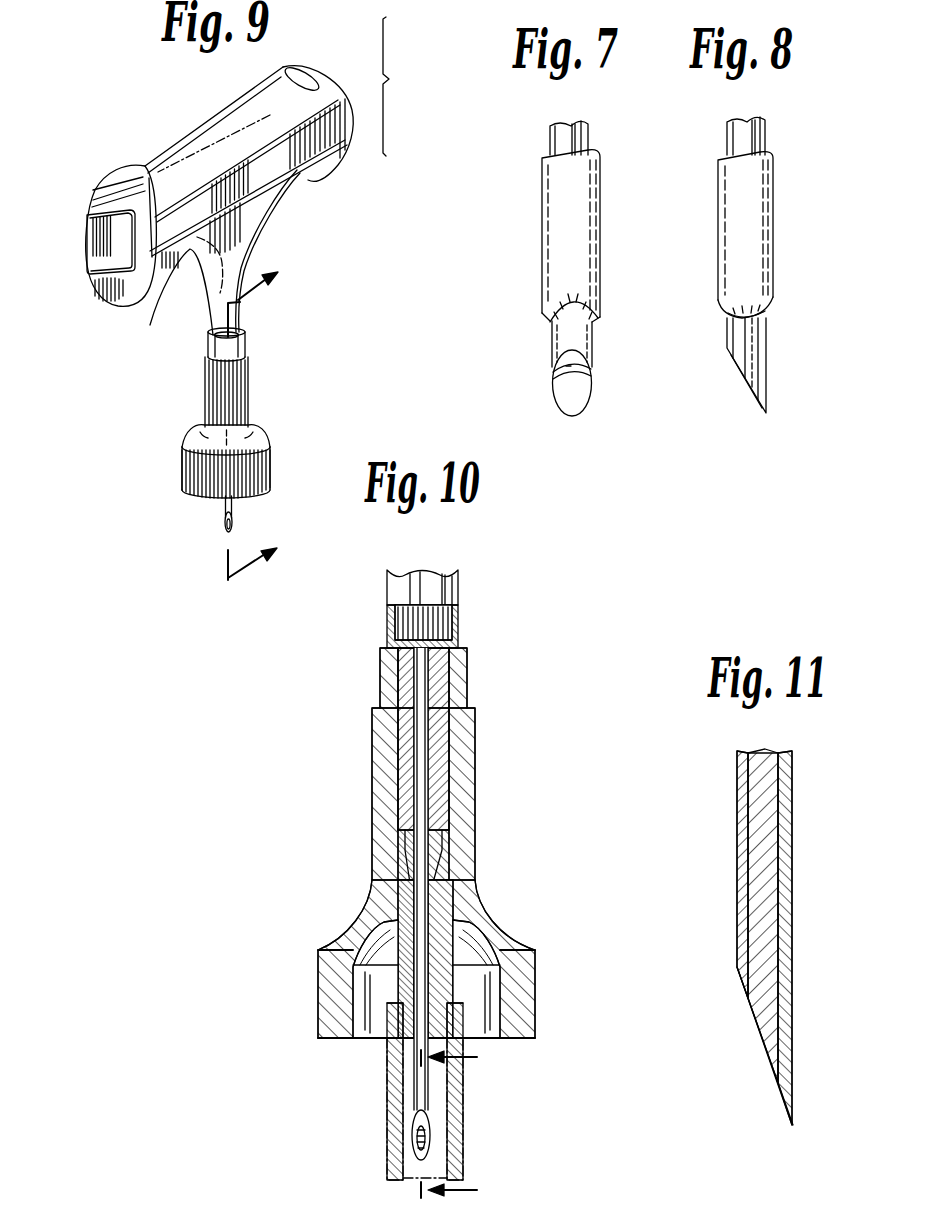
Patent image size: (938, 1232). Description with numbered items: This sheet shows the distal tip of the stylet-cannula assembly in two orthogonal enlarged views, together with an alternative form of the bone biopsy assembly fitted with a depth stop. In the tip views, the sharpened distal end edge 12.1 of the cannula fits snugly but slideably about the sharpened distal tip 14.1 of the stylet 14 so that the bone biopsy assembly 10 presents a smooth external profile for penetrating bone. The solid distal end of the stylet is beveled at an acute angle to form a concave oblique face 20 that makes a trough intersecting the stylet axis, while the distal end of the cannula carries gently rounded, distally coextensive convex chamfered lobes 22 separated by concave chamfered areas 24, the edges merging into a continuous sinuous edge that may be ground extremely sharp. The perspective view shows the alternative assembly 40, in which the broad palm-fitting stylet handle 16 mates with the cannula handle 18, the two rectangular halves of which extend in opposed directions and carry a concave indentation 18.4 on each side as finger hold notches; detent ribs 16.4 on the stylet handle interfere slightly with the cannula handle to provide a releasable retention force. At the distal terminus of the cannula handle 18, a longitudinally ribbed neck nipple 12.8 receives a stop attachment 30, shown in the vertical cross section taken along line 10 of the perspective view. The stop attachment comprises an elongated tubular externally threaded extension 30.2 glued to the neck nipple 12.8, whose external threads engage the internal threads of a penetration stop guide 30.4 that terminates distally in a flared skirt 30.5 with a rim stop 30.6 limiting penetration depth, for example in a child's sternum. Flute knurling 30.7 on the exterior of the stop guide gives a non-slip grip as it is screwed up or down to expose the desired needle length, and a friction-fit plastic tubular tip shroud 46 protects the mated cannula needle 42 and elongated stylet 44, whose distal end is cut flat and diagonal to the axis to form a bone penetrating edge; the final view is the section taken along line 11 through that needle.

In FIG. 9, the bone biopsy assembly 10 is at (269, 418).
In FIG. 10, the section line 11 is at (466, 1123).
In FIG. 7, the sharpened distal end edge 12.1 is at (588, 285).
In FIG. 8, the sharpened distal end edge 12.1 is at (776, 283).
In FIG. 10, the neck nipple 12.8 is at (403, 630).
In FIG. 9, the stylet 14 is at (196, 203).
In FIG. 7, the sharpened distal tip 14.1 is at (559, 385).
In FIG. 8, the sharpened distal tip 14.1 is at (788, 384).
In FIG. 9, the stylet handle 16 is at (200, 128).
In FIG. 9, the detent ribs 16.4 is at (133, 270).
In FIG. 9, the cannula handle 18 is at (101, 253).
In FIG. 9, the concave indentation 18.4 is at (170, 307).
In FIG. 7, the oblique face 20 is at (578, 383).
In FIG. 8, the oblique face 20 is at (743, 393).
In FIG. 7, the convex chamfered lobes 22 is at (545, 318).
In FIG. 8, the convex chamfered lobes 22 is at (775, 300).
In FIG. 7, the concave chamfered areas 24 is at (593, 333).
In FIG. 8, the concave chamfered areas 24 is at (768, 313).
In FIG. 9, the stop attachment 30 is at (195, 444).
In FIG. 10, the stop attachment 30 is at (394, 918).
In FIG. 9, the threaded extension 30.2 is at (212, 345).
In FIG. 10, the threaded extension 30.2 is at (378, 675).
In FIG. 9, the penetration stop guide 30.4 is at (218, 469).
In FIG. 10, the penetration stop guide 30.4 is at (476, 986).
In FIG. 10, the flared skirt 30.5 is at (537, 992).
In FIG. 9, the rim stop 30.6 is at (258, 486).
In FIG. 10, the rim stop 30.6 is at (513, 1040).
In FIG. 9, the flute knurling 30.7 is at (205, 382).
In FIG. 10, the flute knurling 30.7 is at (477, 760).
In FIG. 9, the assembly 40 is at (403, 86).
In FIG. 9, the cannula needle 42 is at (221, 528).
In FIG. 10, the cannula needle 42 is at (429, 912).
In FIG. 11, the cannula needle 42 is at (767, 938).
In FIG. 9, the elongated stylet 44 is at (225, 526).
In FIG. 10, the elongated stylet 44 is at (417, 1140).
In FIG. 11, the elongated stylet 44 is at (763, 1027).
In FIG. 10, the tubular tip shroud 46 is at (390, 1080).